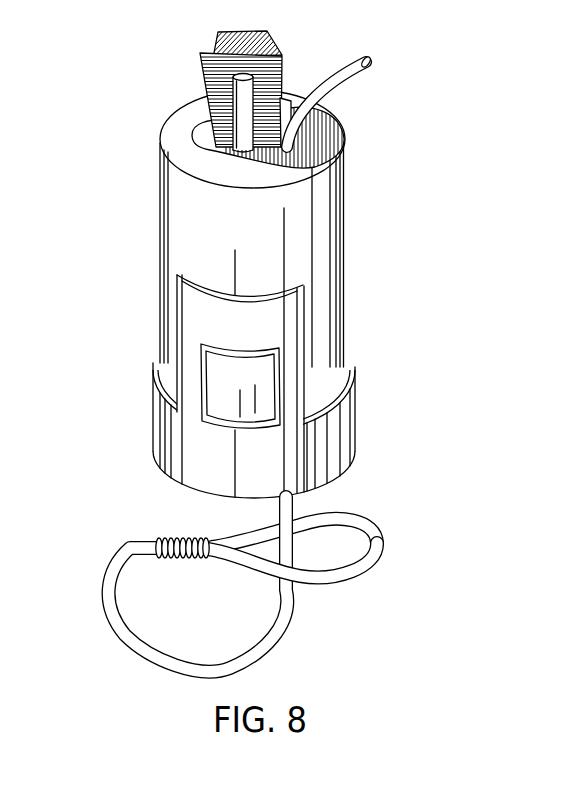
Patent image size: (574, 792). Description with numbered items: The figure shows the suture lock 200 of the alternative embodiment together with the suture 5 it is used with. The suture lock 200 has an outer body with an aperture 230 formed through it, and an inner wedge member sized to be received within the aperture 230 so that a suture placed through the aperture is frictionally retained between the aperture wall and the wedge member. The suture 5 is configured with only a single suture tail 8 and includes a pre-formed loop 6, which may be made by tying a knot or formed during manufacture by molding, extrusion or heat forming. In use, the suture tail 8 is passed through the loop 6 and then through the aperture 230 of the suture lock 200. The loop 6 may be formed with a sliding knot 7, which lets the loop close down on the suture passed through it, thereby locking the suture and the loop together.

The suture lock 200 is at (143, 200).
The aperture 230 is at (344, 150).
The suture 5 is at (345, 69).
The suture tail 8 is at (372, 62).
The pre-formed loop 6 is at (372, 528).
The sliding knot 7 is at (178, 542).